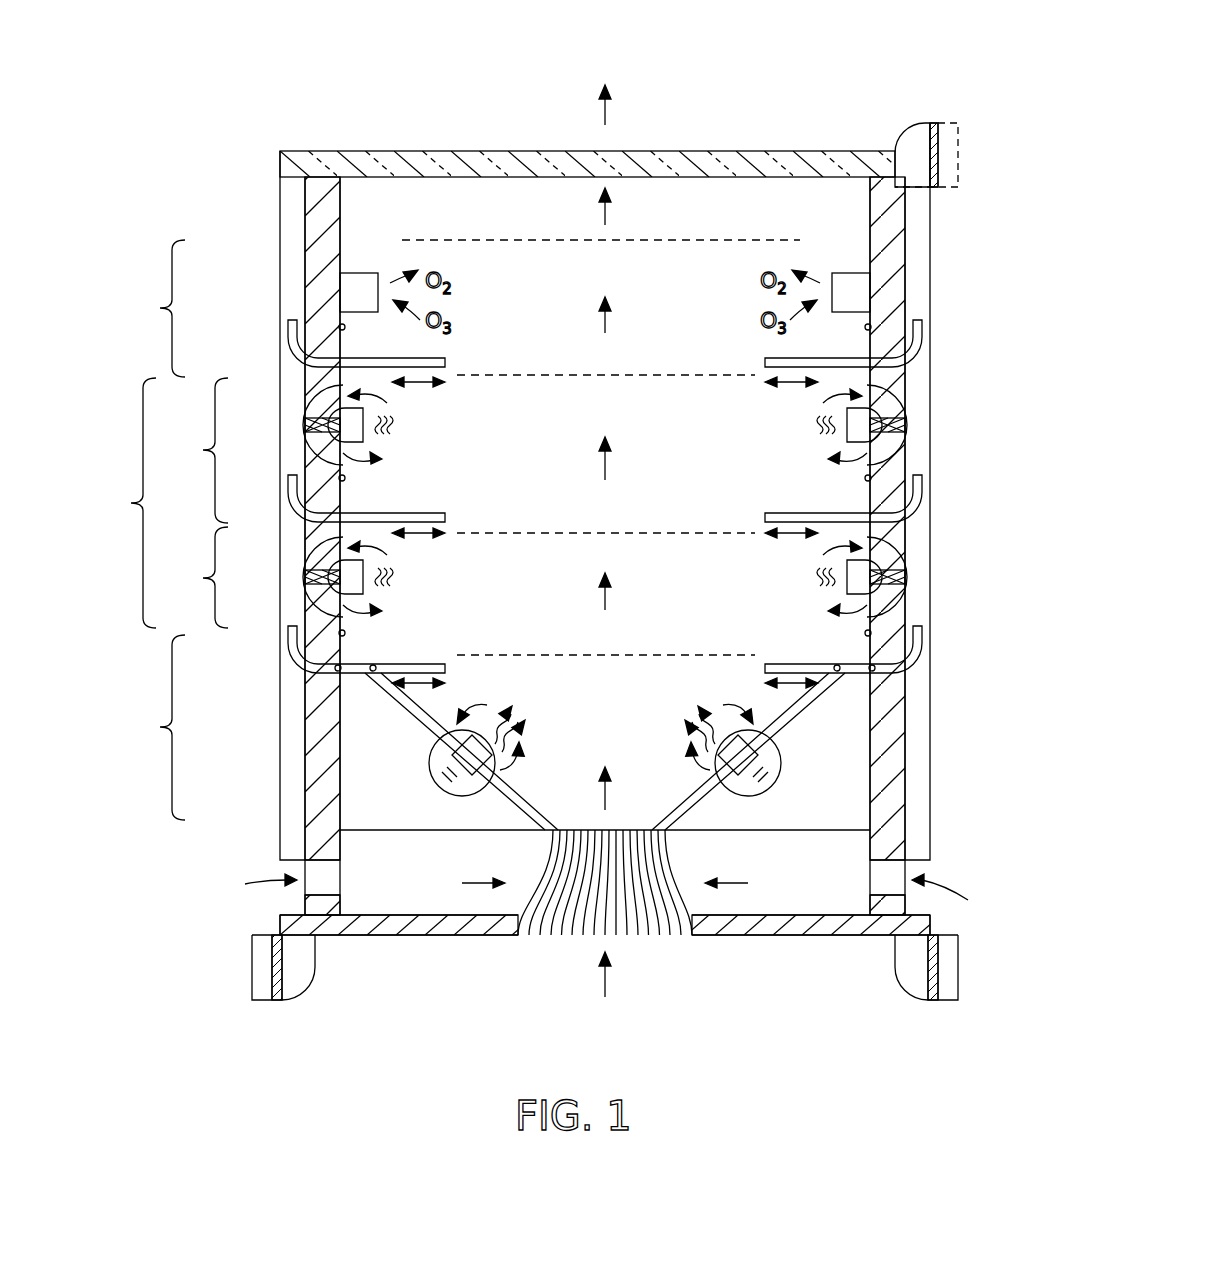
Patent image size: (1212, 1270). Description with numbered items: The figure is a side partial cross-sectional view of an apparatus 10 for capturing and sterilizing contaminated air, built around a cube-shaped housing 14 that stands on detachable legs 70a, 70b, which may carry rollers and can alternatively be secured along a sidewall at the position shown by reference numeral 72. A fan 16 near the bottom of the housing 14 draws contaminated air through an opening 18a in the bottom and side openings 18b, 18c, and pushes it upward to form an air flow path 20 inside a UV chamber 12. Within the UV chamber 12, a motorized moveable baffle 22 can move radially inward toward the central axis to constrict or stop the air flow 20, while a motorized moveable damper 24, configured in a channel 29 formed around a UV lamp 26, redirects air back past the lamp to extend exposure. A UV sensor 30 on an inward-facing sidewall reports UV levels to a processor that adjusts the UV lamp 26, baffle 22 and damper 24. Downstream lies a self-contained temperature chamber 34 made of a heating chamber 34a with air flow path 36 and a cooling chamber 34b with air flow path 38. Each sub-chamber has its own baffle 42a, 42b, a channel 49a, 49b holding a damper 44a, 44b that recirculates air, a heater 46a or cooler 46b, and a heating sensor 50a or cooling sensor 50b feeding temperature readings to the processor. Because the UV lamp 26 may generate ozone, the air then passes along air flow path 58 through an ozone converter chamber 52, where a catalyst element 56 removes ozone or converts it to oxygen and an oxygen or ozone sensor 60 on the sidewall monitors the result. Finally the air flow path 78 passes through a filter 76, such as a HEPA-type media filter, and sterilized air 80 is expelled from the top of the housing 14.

The apparatus 10 is at (930, 80).
The UV chamber 12 is at (160, 727).
The housing 14 is at (920, 790).
The fan 16 is at (668, 872).
The opening 18a is at (633, 961).
The opening 18b is at (355, 893).
The opening 18c is at (861, 893).
The air flow path 20 is at (610, 790).
The moveable baffle 22 is at (447, 668).
The moveable damper 24 is at (445, 787).
The UV lamp 26 is at (465, 755).
The channel 29 is at (468, 790).
The UV sensor 30 is at (513, 788).
The temperature chamber 34 is at (132, 503).
The heating chamber 34a is at (196, 577).
The cooling chamber 34b is at (196, 450).
The air flow path 36 is at (608, 598).
The air flow path 38 is at (608, 465).
The baffle 42a is at (447, 517).
The baffle 42b is at (447, 363).
The damper 44a is at (315, 577).
The damper 44b is at (315, 425).
The heater 46a is at (366, 584).
The cooler 46b is at (366, 432).
The channel 49a is at (318, 589).
The channel 49b is at (318, 437).
The heating sensor 50a is at (346, 634).
The cooling sensor 50b is at (346, 479).
The ozone converter chamber 52 is at (160, 308).
The catalyst element 56 is at (348, 290).
The air flow path 58 is at (608, 322).
The oxygen or ozone sensor 60 is at (346, 328).
The leg 70a is at (952, 972).
The leg 70b is at (252, 972).
The alternative leg position 72 is at (960, 160).
The filter 76 is at (785, 162).
The air flow path 78 is at (608, 215).
The sterilized air 80 is at (608, 118).